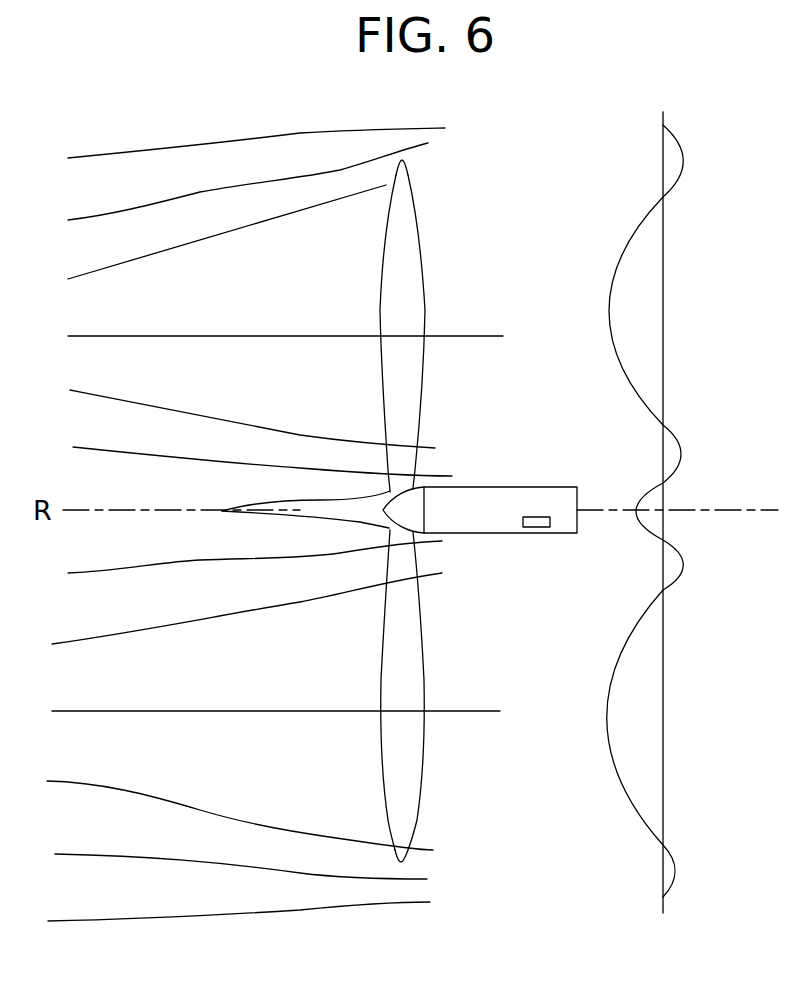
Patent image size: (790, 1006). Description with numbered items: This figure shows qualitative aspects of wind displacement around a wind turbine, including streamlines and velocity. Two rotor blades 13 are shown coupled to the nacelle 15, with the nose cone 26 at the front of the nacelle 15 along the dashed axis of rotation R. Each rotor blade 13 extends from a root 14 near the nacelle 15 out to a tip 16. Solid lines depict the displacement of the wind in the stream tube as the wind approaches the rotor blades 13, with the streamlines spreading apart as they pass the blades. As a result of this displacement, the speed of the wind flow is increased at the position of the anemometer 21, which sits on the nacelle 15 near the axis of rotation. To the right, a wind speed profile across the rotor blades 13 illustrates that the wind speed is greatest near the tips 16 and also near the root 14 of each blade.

The rotor blade 13 is at (407, 263).
The root 14 is at (400, 467).
The nacelle 15 is at (511, 497).
The tip 16 is at (405, 172).
The anemometer 21 is at (537, 520).
The nose cone 26 is at (415, 518).